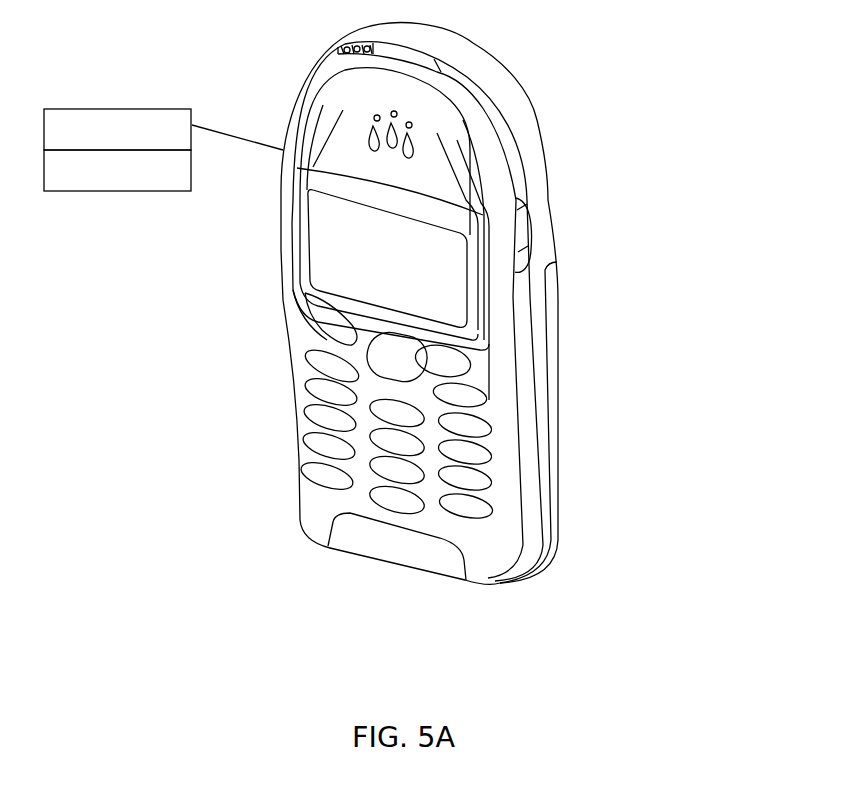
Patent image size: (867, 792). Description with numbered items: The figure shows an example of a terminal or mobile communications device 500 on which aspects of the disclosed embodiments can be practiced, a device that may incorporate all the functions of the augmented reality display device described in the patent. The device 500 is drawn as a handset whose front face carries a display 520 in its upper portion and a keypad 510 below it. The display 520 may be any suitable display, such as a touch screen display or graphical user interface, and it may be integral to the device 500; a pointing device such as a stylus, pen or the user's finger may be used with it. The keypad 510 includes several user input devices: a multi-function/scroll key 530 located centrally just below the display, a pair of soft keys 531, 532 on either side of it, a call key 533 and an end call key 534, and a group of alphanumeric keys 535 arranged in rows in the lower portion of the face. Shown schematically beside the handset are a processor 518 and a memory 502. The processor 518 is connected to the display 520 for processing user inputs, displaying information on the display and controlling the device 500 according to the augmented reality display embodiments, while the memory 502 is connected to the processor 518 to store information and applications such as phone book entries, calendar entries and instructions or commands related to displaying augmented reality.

The mobile communications device 500 is at (514, 34).
The memory 502 is at (88, 191).
The processor 518 is at (88, 109).
The keypad 510 is at (484, 531).
The display 520 is at (437, 282).
The multi-function/scroll key 530 is at (480, 342).
The soft key 531 is at (330, 325).
The soft key 532 is at (462, 360).
The call key 533 is at (330, 359).
The end call key 534 is at (463, 396).
The alphanumeric keys 535 is at (330, 477).